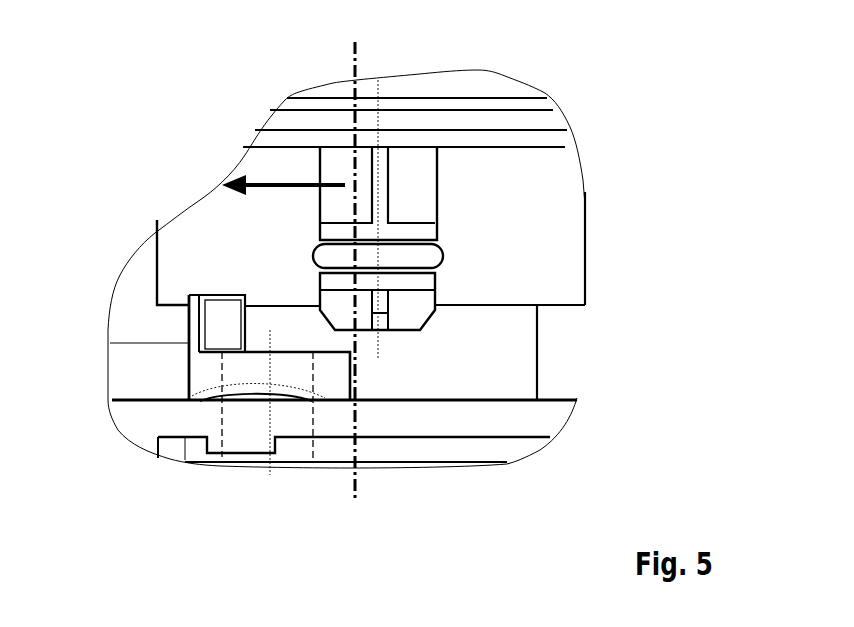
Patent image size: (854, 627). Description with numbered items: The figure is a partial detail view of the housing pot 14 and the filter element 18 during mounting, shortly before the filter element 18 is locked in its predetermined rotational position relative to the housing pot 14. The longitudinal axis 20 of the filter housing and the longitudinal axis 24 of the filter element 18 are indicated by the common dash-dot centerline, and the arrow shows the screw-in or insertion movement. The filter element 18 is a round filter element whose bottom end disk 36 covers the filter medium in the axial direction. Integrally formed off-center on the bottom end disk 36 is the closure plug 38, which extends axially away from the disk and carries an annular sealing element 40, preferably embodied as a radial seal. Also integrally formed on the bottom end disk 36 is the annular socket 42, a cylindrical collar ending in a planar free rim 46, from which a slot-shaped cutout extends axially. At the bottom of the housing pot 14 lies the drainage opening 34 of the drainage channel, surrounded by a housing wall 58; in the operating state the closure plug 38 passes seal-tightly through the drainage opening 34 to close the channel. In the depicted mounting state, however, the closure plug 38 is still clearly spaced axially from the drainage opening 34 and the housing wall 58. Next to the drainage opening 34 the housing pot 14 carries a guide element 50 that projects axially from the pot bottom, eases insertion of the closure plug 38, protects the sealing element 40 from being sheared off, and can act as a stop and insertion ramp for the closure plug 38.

The housing pot 14 is at (565, 414).
The filter element 18 is at (580, 107).
The longitudinal axis 20 is at (357, 50).
The longitudinal axis 24 is at (357, 50).
The drainage opening 34 is at (289, 335).
The bottom end disk 36 is at (520, 137).
The closure plug 38 is at (428, 303).
The sealing element 40 is at (345, 256).
The socket 42 is at (535, 190).
The free rim 46 is at (550, 307).
The guide element 50 is at (197, 321).
The housing wall 58 is at (205, 375).